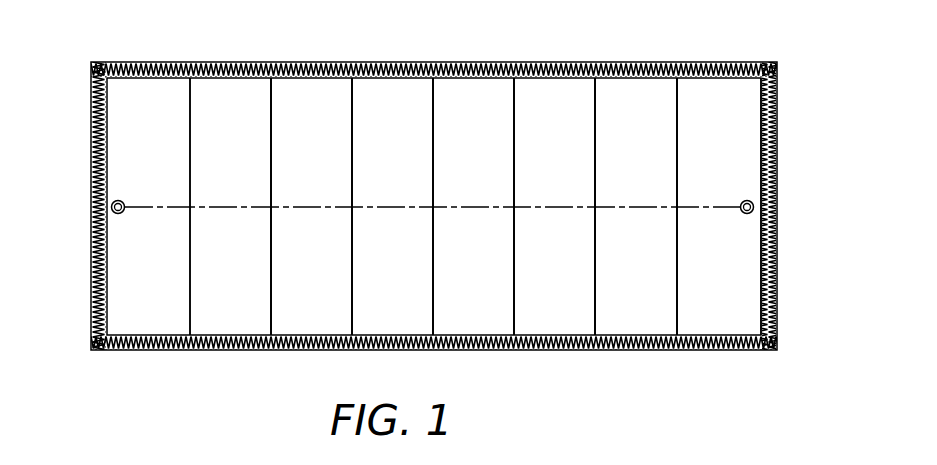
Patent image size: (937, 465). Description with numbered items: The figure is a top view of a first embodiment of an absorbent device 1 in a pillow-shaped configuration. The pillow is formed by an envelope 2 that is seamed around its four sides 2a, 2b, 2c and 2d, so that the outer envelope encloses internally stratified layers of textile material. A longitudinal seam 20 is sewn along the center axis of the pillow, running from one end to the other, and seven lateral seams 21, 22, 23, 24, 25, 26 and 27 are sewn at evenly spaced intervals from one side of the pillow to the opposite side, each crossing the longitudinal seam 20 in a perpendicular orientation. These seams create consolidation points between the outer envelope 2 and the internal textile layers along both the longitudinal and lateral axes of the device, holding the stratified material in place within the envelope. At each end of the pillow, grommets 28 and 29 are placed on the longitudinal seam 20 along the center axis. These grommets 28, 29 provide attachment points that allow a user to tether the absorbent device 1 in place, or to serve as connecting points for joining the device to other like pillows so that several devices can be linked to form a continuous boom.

The absorbent device 1 is at (480, 185).
The envelope 2 is at (558, 100).
The side of envelope 2a is at (633, 352).
The side of envelope 2b is at (90, 278).
The side of envelope 2c is at (210, 62).
The side of envelope 2d is at (781, 116).
The longitudinal seam 20 is at (635, 206).
The lateral seam 21 is at (193, 242).
The lateral seam 22 is at (273, 243).
The lateral seam 23 is at (353, 243).
The lateral seam 24 is at (435, 243).
The lateral seam 25 is at (516, 243).
The lateral seam 26 is at (597, 243).
The lateral seam 27 is at (680, 243).
The grommet 28 is at (120, 200).
The grommet 29 is at (746, 200).